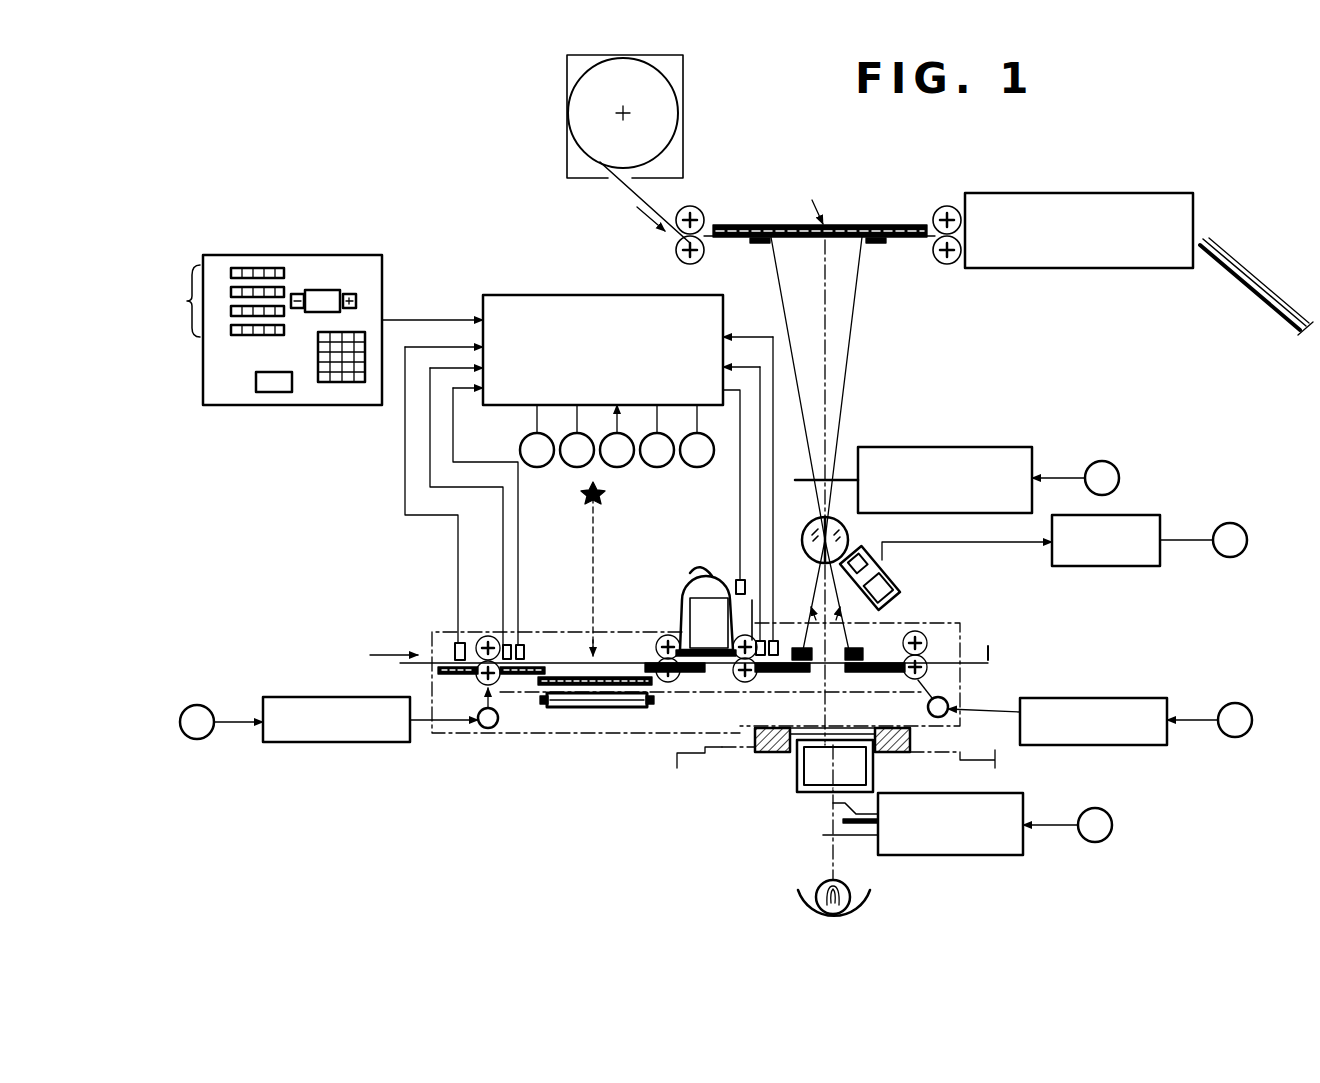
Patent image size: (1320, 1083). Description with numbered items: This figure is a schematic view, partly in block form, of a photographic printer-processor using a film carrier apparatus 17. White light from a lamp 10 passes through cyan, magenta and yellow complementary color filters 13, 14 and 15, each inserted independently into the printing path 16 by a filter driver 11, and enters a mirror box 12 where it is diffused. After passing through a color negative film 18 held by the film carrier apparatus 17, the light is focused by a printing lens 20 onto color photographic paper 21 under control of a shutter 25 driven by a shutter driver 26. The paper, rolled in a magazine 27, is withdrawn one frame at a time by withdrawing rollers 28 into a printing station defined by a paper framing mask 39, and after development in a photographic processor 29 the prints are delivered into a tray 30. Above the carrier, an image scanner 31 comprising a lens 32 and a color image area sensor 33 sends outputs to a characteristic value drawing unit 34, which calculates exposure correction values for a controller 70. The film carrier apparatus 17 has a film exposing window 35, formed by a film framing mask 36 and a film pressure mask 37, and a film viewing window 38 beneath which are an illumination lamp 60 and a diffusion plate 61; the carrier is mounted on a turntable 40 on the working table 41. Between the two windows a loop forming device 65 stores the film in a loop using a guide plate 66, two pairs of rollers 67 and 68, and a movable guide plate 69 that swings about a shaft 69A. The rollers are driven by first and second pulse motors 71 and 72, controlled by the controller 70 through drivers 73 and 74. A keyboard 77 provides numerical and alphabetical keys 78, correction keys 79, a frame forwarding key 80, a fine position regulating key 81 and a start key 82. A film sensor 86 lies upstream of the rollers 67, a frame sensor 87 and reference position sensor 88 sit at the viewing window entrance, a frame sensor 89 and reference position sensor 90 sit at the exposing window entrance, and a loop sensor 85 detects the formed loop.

The lamp 10 is at (870, 912).
The filter driver 11 is at (948, 855).
The mirror box 12 is at (873, 776).
The cyan color filter 13 is at (825, 838).
The magenta color filter 14 is at (843, 821).
The yellow color filter 15 is at (840, 806).
The printing path 16 is at (838, 862).
The film carrier apparatus 17 is at (966, 680).
The color negative film 18 is at (942, 655).
The printing lens 20 is at (812, 522).
The color photographic paper 21 is at (832, 240).
The shutter 25 is at (848, 470).
The shutter driver 26 is at (948, 447).
The magazine 27 is at (683, 130).
The withdrawing rollers 28 is at (702, 207).
The photographic processor 29 is at (1195, 190).
The tray 30 is at (1248, 285).
The image scanner 31 is at (898, 588).
The lens 32 is at (868, 612).
The color image area sensor 33 is at (904, 571).
The characteristic value drawing unit 34 is at (1052, 557).
The film exposing window 35 is at (862, 676).
The film framing mask 36 is at (802, 676).
The film pressure mask 37 is at (805, 645).
The film viewing window 38 is at (596, 575).
The paper framing mask 39 is at (876, 245).
The turntable 40 is at (913, 736).
The working table 41 is at (925, 755).
The illumination lamp 60 is at (648, 704).
The diffusion plate 61 is at (565, 675).
The loop forming device 65 is at (697, 572).
The guide plate 66 is at (703, 662).
The rollers 67 is at (480, 683).
The rollers 68 is at (745, 683).
The movable guide plate 69 is at (680, 598).
The shaft 69A is at (680, 625).
The controller 70 is at (535, 295).
The first pulse motor 71 is at (500, 718).
The second pulse motor 72 is at (928, 710).
The driver 73 is at (278, 697).
The driver 74 is at (1097, 698).
The keyboard 77 is at (255, 250).
The numerical and alphabetical keys 78 is at (343, 385).
The correction keys 79 is at (219, 301).
The frame forwarding key 80 is at (330, 312).
The fine position regulating key 81 is at (322, 290).
The start key 82 is at (272, 394).
The loop sensor 85 is at (738, 578).
The film sensor 86 is at (456, 643).
The frame sensor 87 is at (527, 644).
The reference position sensor 88 is at (493, 638).
The frame sensor 89 is at (770, 638).
The reference position sensor 90 is at (752, 600).